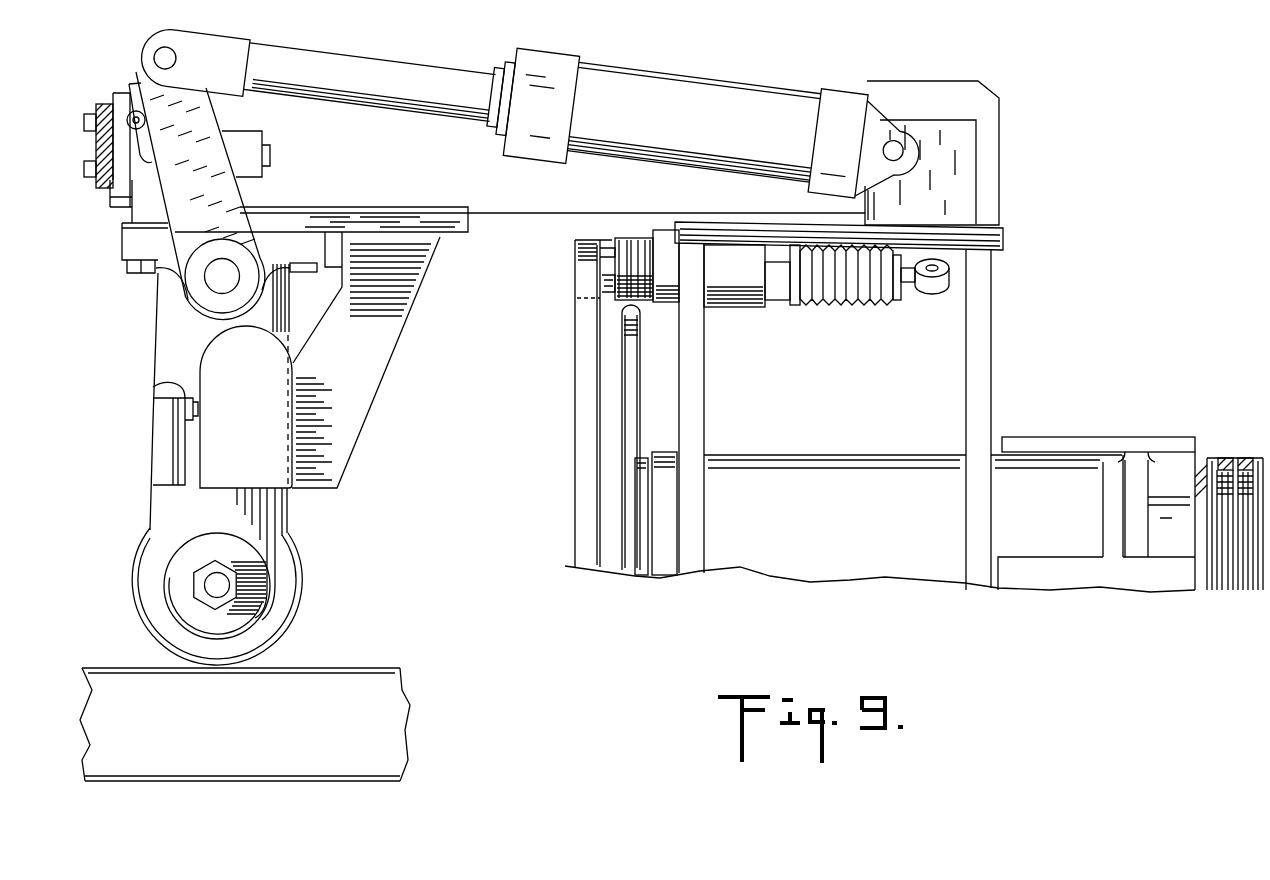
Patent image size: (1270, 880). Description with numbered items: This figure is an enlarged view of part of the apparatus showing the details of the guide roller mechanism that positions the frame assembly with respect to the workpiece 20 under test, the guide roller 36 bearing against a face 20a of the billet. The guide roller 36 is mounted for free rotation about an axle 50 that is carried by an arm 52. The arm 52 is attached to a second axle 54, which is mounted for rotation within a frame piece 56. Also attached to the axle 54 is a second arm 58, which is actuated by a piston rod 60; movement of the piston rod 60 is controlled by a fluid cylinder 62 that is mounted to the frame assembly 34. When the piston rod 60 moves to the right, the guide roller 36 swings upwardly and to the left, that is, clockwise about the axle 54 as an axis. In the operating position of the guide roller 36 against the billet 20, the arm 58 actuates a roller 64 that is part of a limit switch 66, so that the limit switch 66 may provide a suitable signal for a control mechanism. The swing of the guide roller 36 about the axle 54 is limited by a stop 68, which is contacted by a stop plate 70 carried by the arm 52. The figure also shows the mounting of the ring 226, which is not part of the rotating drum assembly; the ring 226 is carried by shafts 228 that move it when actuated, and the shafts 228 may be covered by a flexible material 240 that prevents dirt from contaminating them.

The workpiece 20 is at (372, 686).
The face of the billet 20a is at (305, 668).
The frame assembly 34 is at (965, 80).
The guide roller 36 is at (288, 595).
The axle 50 is at (220, 583).
The arm 52 is at (271, 511).
The second axle 54 is at (218, 281).
The frame piece 56 is at (137, 243).
The second arm 58 is at (134, 86).
The piston rod 60 is at (292, 66).
The fluid cylinder 62 is at (638, 82).
The roller 64 is at (124, 96).
The limit switch 66 is at (242, 141).
The stop 68 is at (153, 387).
The stop plate 70 is at (177, 440).
The ring 226 is at (578, 497).
The shafts 228 is at (603, 242).
The flexible material 240 is at (842, 304).